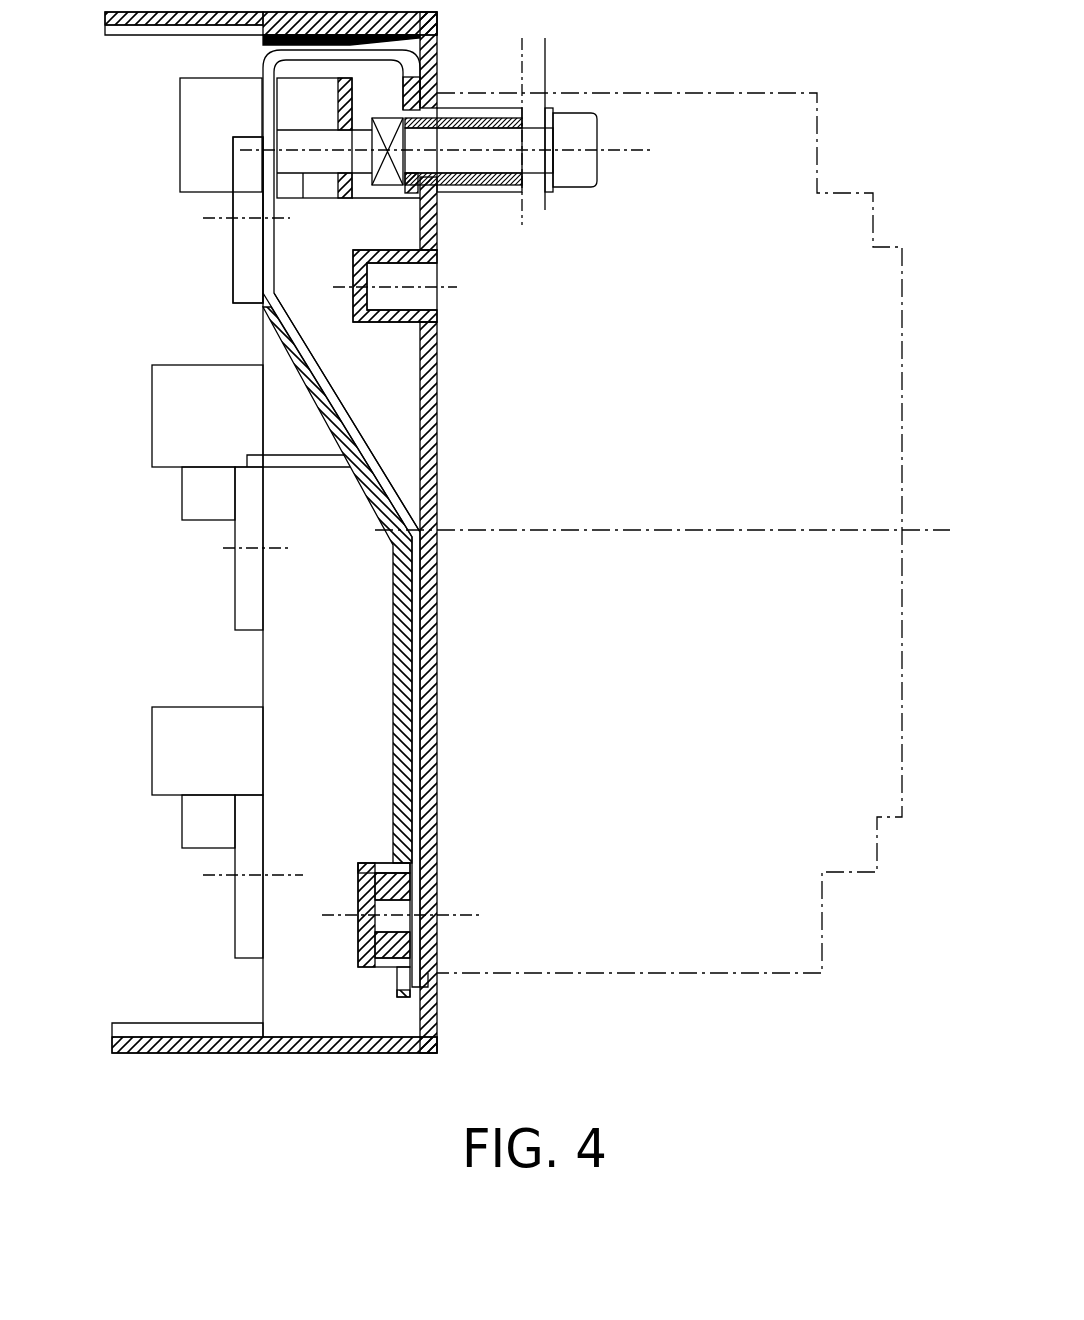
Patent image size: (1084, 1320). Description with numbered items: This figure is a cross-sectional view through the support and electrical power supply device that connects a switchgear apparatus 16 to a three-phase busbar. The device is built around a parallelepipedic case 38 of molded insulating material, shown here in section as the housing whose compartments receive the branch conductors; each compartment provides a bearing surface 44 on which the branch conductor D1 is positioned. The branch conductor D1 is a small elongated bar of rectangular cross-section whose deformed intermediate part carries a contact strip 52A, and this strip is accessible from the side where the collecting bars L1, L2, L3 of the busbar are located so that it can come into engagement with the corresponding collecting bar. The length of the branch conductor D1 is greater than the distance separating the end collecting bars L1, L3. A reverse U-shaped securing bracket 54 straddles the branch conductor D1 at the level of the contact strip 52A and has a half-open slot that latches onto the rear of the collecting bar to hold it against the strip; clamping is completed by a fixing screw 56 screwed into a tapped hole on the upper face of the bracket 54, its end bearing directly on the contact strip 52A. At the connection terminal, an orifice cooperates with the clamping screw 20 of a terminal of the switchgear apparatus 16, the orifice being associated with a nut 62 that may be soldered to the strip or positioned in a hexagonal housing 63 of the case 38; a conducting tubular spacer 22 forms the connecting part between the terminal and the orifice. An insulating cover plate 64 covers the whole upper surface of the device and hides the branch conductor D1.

The switchgear apparatus 16 is at (655, 930).
The clamping screw 20 is at (533, 145).
The tubular spacer 22 is at (487, 118).
The case 38 is at (370, 1040).
The bearing surface 44 is at (355, 473).
The contact strip 52A is at (270, 177).
The securing bracket 54 is at (210, 136).
The fixing screw 56 is at (338, 140).
The nut 62 is at (390, 178).
The hexagonal housing 63 is at (375, 865).
The insulating cover plate 64 is at (432, 350).
The branch conductor D1 is at (383, 452).
The collecting bar L1 is at (247, 278).
The collecting bar L2 is at (247, 587).
The collecting bar L3 is at (247, 926).